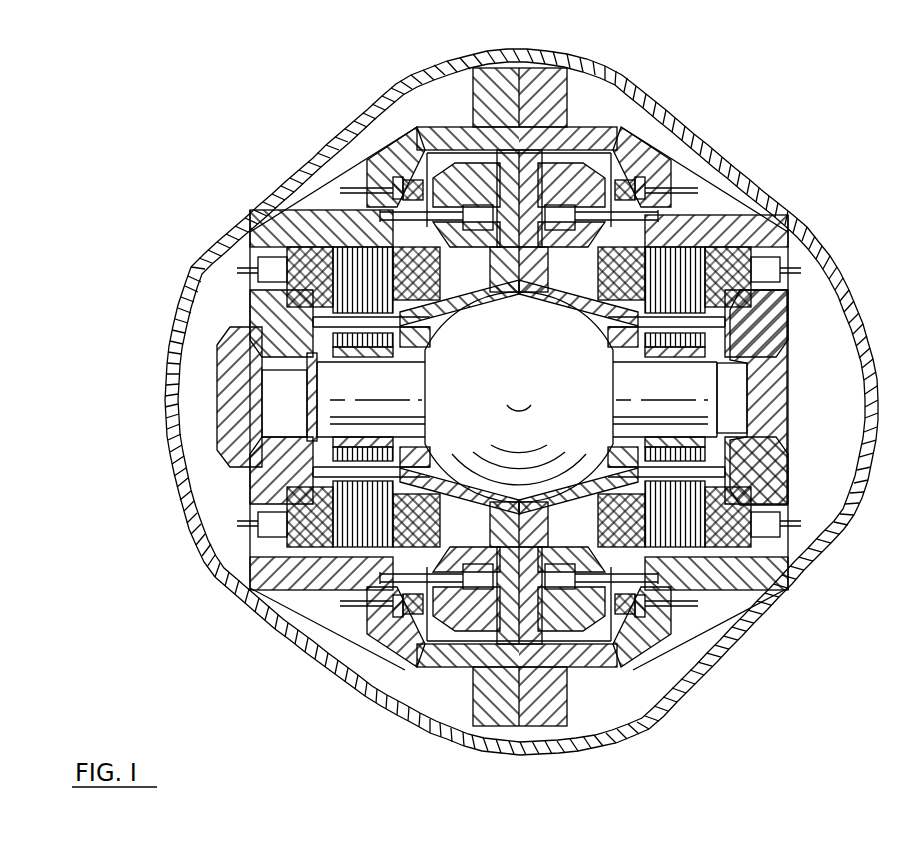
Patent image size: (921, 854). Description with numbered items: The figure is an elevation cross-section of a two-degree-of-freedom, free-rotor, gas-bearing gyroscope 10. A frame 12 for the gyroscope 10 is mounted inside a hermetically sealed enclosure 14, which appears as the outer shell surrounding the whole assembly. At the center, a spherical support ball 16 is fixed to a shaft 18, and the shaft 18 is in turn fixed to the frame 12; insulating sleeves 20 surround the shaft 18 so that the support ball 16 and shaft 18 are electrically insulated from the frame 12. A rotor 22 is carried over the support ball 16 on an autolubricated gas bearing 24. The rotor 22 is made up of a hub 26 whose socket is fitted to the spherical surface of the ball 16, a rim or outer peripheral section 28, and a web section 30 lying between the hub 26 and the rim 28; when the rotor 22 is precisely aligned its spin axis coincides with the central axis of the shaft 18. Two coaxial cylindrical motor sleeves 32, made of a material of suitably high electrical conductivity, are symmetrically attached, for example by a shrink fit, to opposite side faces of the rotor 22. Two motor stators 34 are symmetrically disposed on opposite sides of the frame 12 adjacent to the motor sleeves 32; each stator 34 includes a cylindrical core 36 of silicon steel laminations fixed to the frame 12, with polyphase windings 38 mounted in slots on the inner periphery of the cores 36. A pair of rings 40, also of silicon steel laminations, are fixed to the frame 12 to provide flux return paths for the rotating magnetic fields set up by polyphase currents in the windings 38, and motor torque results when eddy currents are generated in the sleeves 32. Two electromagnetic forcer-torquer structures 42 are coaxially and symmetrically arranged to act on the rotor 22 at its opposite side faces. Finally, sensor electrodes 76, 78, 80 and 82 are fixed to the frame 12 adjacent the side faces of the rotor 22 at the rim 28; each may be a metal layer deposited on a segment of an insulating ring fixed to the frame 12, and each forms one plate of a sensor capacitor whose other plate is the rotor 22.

The gyroscope 10 is at (778, 116).
The frame 12 is at (568, 102).
The hermetically sealed enclosure 14 is at (672, 697).
The spherical support ball 16 is at (580, 394).
The shaft 18 is at (376, 400).
The insulating sleeves 20 is at (305, 440).
The rotor 22 is at (545, 284).
The gas bearing 24 is at (450, 478).
The hub 26 is at (468, 297).
The rim 28 is at (492, 188).
The web section 30 is at (519, 397).
The motor sleeves 32 is at (305, 345).
The motor stators 34 is at (519, 397).
The cylindrical core 36 is at (519, 397).
The polyphase windings 38 is at (519, 397).
The rings 40 is at (308, 353).
The electromagnetic forcer-torquer structures 42 is at (576, 188).
The sensor electrode 76 is at (628, 183).
The sensor electrode 78 is at (630, 618).
The sensor electrode 80 is at (412, 186).
The sensor electrode 82 is at (415, 616).